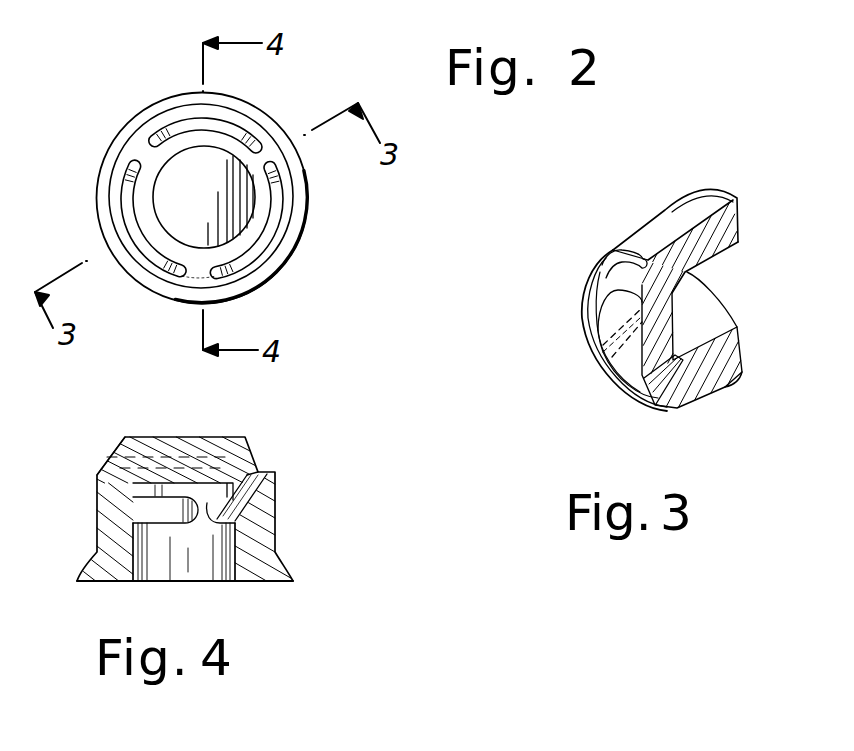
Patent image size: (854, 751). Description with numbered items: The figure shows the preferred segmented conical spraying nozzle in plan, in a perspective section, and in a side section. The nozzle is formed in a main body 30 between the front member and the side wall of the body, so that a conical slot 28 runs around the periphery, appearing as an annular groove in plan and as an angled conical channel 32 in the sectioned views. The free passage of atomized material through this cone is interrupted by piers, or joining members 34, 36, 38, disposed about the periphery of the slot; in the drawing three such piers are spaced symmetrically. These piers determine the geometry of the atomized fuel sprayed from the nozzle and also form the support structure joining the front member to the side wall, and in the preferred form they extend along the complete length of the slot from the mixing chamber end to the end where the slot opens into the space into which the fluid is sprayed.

In FIG. 2, the annular groove 28 is at (173, 130).
In FIG. 3, the annular groove 28 is at (610, 263).
In FIG. 4, the annular groove 28 is at (265, 465).
In FIG. 2, the nut body 30 is at (202, 198).
In FIG. 3, the nut body 30 is at (683, 382).
In FIG. 4, the nut body 30 is at (278, 493).
In FIG. 3, the angled slit 32 is at (613, 377).
In FIG. 4, the angled slit 32 is at (247, 440).
In FIG. 2, the web 34 is at (270, 154).
In FIG. 2, the web / slot end 36 is at (143, 152).
In FIG. 3, the web / slot end 36 is at (600, 338).
In FIG. 4, the web / slot end 36 is at (205, 455).
In FIG. 2, the web 38 is at (198, 271).
In FIG. 4, the web 38 is at (120, 463).